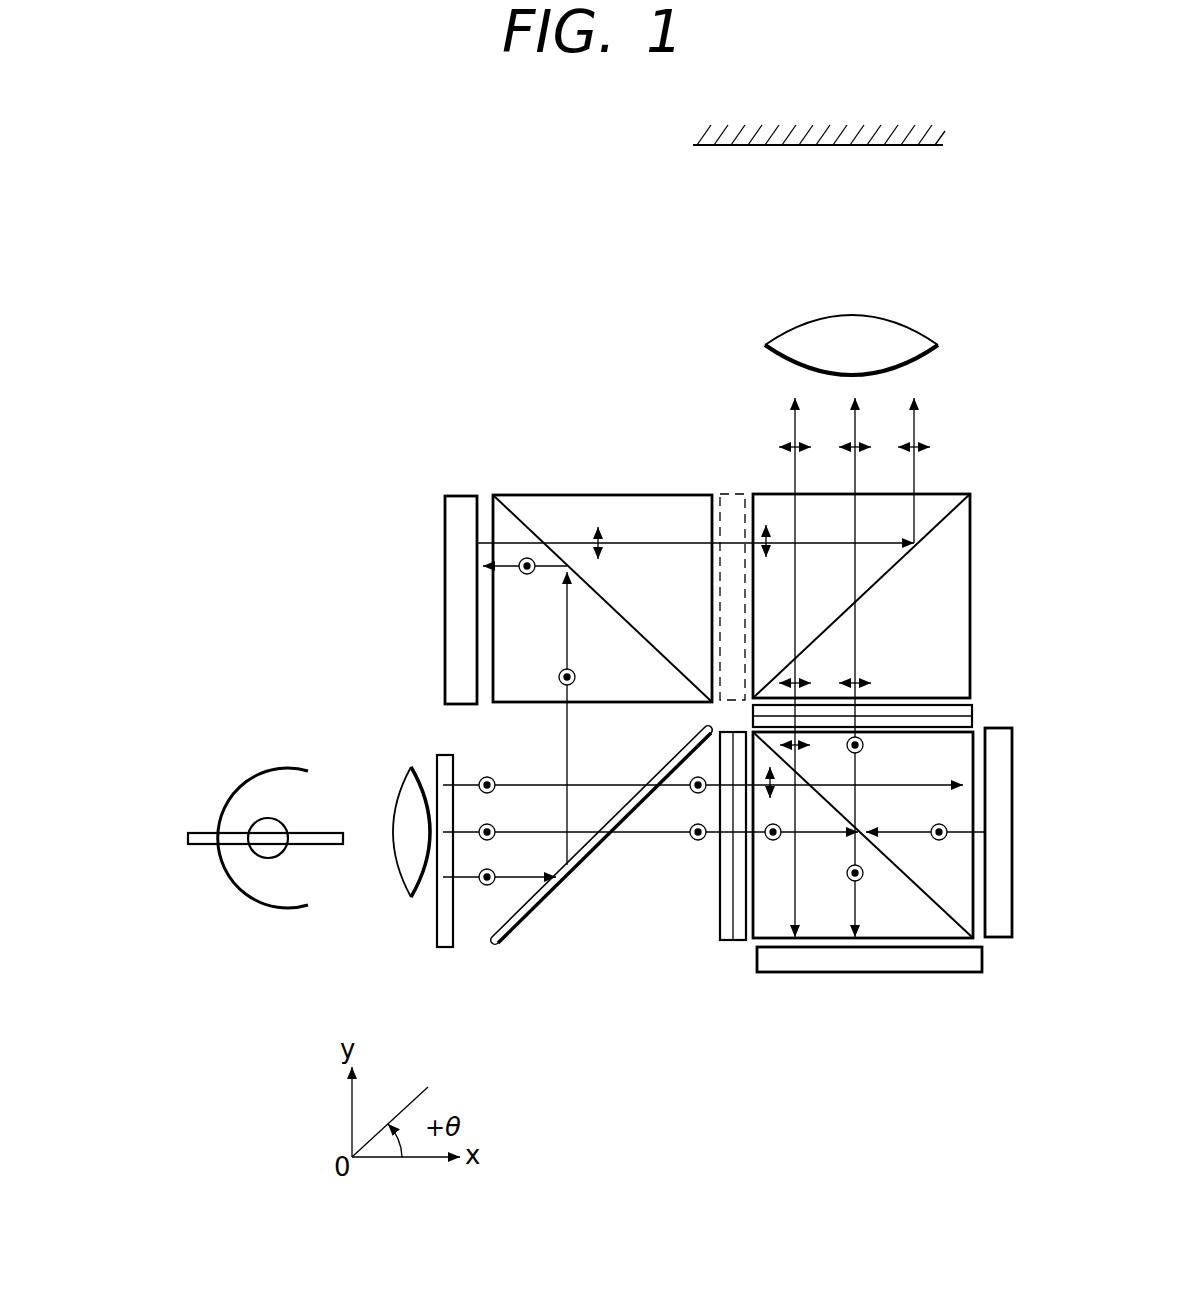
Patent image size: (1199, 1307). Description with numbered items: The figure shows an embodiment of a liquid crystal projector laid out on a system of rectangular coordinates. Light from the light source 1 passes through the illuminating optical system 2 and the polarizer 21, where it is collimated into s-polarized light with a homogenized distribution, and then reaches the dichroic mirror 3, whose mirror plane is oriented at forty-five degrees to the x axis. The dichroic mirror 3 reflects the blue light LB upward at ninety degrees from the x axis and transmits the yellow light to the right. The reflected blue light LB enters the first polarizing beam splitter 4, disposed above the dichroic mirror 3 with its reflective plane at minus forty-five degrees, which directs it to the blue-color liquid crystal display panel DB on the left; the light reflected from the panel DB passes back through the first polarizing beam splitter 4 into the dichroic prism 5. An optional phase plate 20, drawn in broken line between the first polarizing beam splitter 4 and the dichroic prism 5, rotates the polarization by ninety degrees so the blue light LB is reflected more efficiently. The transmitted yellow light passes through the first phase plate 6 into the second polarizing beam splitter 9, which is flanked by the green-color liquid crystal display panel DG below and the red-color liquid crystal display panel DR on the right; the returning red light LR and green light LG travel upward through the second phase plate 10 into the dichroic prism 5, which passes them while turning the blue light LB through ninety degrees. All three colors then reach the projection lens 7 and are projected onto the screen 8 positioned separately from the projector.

The light source 1 is at (270, 858).
The illuminating optical system 2 is at (402, 885).
The polarizer 21 is at (443, 755).
The dichroic mirror 3 is at (515, 930).
The first polarizing beam splitter 4 is at (596, 492).
The phase plate 20 is at (733, 492).
The dichroic prism 5 is at (974, 505).
The first phase plate 6 is at (730, 941).
The projection lens 7 is at (908, 325).
The screen 8 is at (907, 146).
The second polarizing beam splitter 9 is at (940, 928).
The second phase plate 10 is at (974, 704).
The blue-color liquid crystal display panel DB is at (450, 541).
The red-color liquid crystal display panel DR is at (1012, 817).
The green-color liquid crystal display panel DG is at (852, 962).
The blue light LB is at (567, 745).
The red light LR is at (615, 785).
The green light LG is at (657, 835).